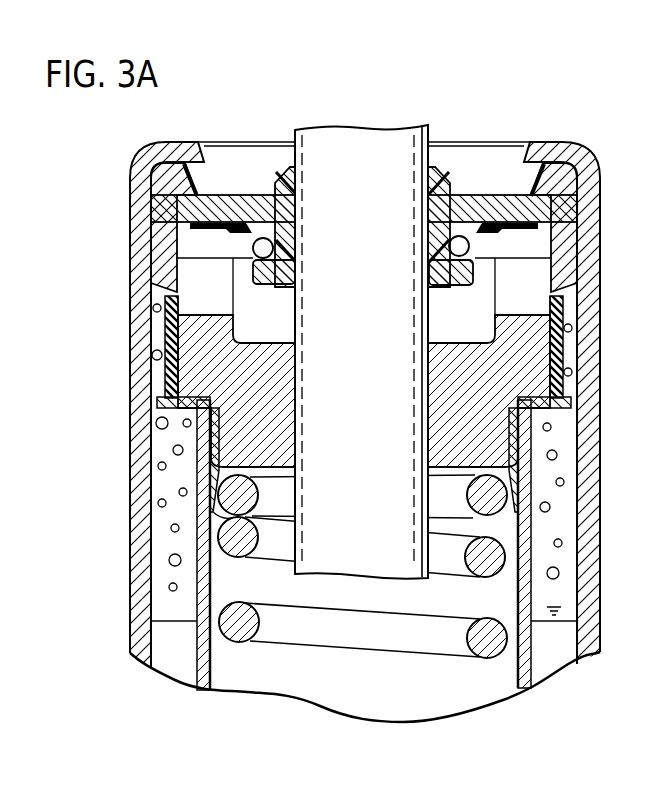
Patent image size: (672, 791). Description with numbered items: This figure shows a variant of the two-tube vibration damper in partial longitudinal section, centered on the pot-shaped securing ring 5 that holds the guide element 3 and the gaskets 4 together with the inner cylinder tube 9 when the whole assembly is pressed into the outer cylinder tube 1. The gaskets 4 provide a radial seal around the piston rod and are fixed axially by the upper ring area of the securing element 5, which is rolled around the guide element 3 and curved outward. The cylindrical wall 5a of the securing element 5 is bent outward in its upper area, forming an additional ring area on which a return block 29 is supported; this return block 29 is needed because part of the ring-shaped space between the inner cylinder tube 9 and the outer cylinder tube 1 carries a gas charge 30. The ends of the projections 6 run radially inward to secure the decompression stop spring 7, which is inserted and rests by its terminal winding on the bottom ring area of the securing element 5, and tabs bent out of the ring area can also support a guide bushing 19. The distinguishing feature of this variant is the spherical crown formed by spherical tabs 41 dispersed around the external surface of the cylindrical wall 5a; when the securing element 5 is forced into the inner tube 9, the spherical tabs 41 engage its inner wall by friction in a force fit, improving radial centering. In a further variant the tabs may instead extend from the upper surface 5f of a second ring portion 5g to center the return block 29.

The outer cylinder tube 1 is at (140, 452).
The guide element 3 is at (567, 263).
The gaskets 4 is at (540, 430).
The securing ring 5 is at (571, 403).
The cylindrical wall 5a is at (520, 437).
The upper surface 5f is at (177, 380).
The second ring portion 5g is at (165, 414).
The projections 6 is at (215, 522).
The decompression stop spring 7 is at (247, 643).
The inner cylinder tube 9 is at (200, 588).
The guide bushing 19 is at (457, 385).
The return block 29 is at (165, 333).
The gas charge 30 is at (550, 507).
The spherical tabs 41 is at (200, 483).